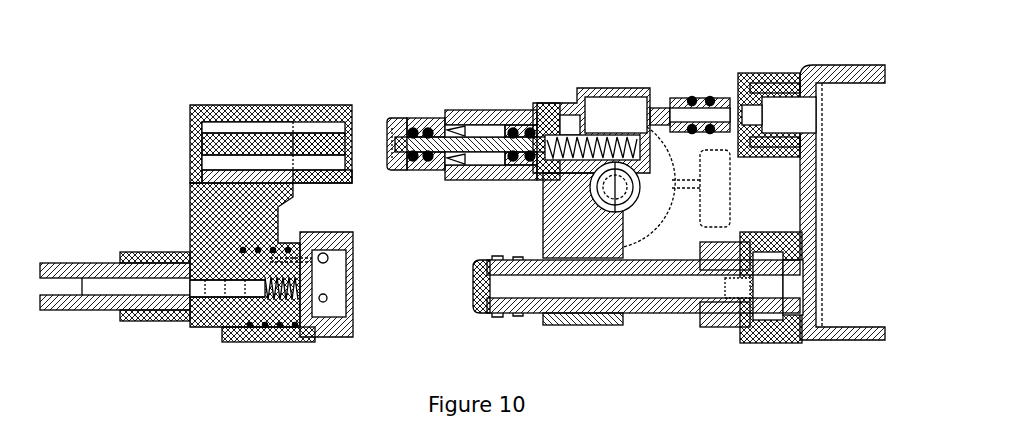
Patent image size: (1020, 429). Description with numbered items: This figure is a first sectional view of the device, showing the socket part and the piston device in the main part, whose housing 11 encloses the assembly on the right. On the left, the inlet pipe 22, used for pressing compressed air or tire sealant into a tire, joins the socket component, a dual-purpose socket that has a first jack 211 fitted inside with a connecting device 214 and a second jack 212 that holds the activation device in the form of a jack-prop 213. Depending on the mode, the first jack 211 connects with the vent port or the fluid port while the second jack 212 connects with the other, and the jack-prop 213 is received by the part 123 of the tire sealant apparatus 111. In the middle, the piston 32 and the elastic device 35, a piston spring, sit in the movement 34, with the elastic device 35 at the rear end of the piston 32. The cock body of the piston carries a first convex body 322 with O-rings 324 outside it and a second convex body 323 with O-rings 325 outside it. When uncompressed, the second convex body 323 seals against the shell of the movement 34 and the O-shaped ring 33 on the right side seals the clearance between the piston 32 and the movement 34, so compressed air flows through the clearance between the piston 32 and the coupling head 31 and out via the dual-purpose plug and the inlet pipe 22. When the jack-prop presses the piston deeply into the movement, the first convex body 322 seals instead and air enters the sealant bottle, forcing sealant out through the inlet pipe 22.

The housing 11 is at (815, 65).
The tire sealant apparatus 111 is at (688, 100).
The part of tire sealant apparatus 123 is at (642, 308).
The inlet pipe 22 is at (88, 262).
The first jack 211 is at (197, 327).
The second jack 212 is at (206, 105).
The jack-prop 213 is at (313, 133).
The connecting device 214 is at (322, 338).
The coupling head 31 is at (388, 118).
The piston 32 is at (447, 112).
The first convex body 322 is at (395, 165).
The second convex body 323 is at (487, 170).
The O-rings 324 is at (430, 165).
The O-rings 325 is at (530, 162).
The O-shaped ring 33 is at (540, 104).
The movement 34 is at (558, 103).
The elastic device 35 is at (617, 133).